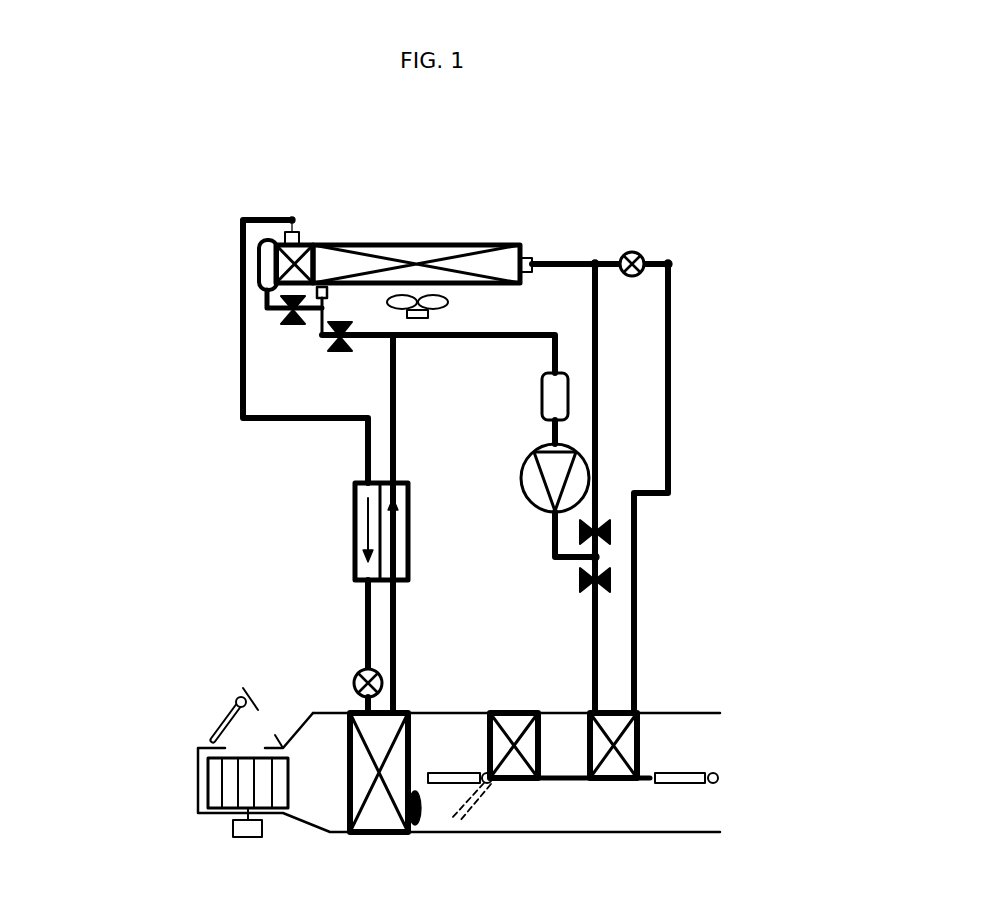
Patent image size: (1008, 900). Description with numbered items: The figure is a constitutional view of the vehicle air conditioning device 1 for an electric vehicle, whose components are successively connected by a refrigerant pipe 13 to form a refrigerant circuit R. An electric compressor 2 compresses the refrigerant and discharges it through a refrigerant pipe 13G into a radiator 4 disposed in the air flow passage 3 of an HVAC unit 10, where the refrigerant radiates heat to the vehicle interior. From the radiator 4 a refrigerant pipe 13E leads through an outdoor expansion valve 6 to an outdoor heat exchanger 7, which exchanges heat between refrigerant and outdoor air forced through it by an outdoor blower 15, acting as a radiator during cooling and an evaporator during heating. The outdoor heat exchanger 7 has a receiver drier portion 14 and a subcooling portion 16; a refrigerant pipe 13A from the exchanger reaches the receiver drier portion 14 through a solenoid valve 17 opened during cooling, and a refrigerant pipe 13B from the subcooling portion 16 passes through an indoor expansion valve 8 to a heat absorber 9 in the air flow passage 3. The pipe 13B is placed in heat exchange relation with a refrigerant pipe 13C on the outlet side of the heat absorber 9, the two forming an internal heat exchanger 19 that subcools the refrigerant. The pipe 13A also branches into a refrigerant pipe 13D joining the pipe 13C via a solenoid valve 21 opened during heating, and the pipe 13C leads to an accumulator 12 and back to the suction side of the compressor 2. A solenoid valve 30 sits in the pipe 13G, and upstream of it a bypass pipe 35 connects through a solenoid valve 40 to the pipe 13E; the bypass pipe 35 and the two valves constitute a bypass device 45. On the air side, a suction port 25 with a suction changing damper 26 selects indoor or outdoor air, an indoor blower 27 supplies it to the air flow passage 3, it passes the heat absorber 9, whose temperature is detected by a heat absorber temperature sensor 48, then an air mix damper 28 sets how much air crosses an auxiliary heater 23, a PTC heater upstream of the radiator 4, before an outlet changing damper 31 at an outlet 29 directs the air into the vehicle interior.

The vehicle air conditioning device 1 is at (684, 388).
The compressor 2 is at (520, 478).
The air flow passage 3 is at (433, 727).
The radiator 4 is at (640, 741).
The outdoor expansion valve 6 is at (632, 278).
The outdoor heat exchanger 7 is at (430, 245).
The indoor expansion valve 8 is at (356, 676).
The heat absorber 9 is at (410, 748).
The HVAC unit 10 is at (477, 707).
The accumulator 12 is at (540, 392).
The refrigerant pipe 13 is at (673, 443).
The refrigerant pipe 13A is at (327, 298).
The refrigerant pipe 13B is at (366, 466).
The refrigerant pipe 13C is at (396, 410).
The refrigerant pipe 13D is at (372, 340).
The refrigerant pipe 13E is at (637, 618).
The refrigerant pipe 13G is at (592, 638).
The receiver drier portion 14 is at (258, 268).
The outdoor blower 15 is at (448, 302).
The subcooling portion 16 is at (300, 240).
The solenoid valve 17 is at (293, 327).
The internal heat exchanger 19 is at (354, 542).
The solenoid valve 21 is at (336, 353).
The auxiliary heater 23 is at (540, 762).
The suction port 25 is at (265, 722).
The suction changing damper 26 is at (215, 722).
The indoor blower 27 is at (208, 786).
The air mix damper 28 is at (462, 773).
The outlet 29 is at (720, 790).
The solenoid valve 30 is at (580, 580).
The outlet changing damper 31 is at (675, 784).
The bypass pipe 35 is at (600, 402).
The solenoid valve 40 is at (612, 533).
The bypass device 45 is at (606, 485).
The heat absorber temperature sensor 48 is at (418, 815).
The refrigerant circuit R is at (276, 483).